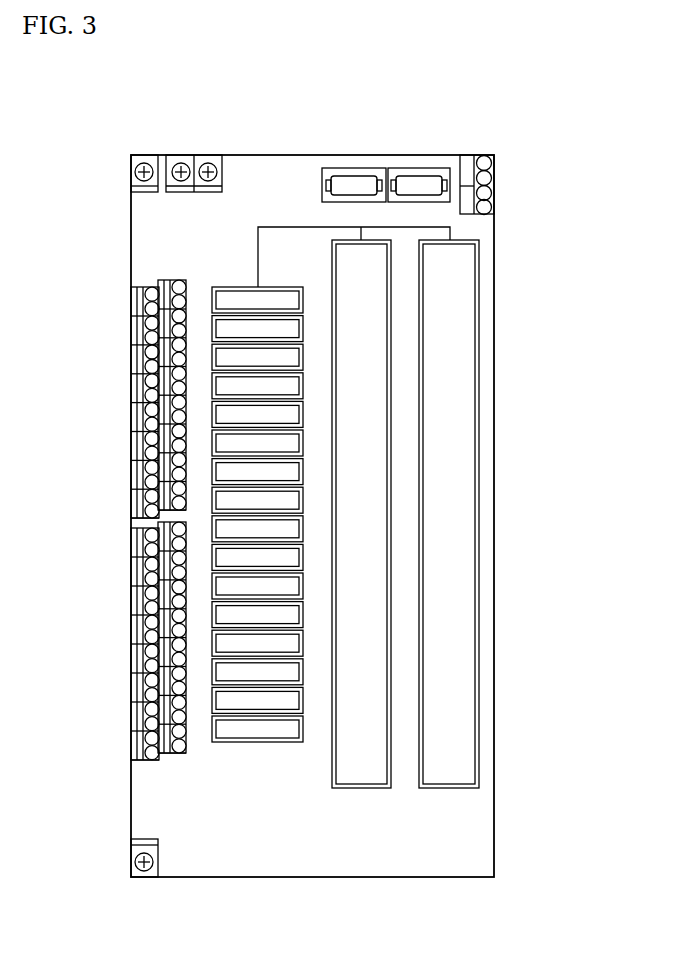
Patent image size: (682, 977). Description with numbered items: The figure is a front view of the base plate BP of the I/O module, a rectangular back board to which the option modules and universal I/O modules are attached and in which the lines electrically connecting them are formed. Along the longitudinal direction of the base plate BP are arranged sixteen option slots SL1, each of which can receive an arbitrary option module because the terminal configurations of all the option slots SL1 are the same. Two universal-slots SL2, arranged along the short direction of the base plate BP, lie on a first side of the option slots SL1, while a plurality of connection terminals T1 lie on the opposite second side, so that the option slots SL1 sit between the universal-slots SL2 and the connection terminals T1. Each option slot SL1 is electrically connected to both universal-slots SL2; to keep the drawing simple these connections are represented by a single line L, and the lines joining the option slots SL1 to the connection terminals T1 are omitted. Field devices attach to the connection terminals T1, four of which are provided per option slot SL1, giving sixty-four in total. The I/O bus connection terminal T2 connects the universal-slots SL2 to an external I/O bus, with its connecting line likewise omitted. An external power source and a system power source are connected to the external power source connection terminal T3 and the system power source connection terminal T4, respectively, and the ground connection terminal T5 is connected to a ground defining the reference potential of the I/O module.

The base plate BP is at (495, 318).
The connection terminal T1 is at (124, 663).
The I/O bus connection terminal T2 is at (388, 156).
The external power source connection terminal T3 is at (195, 145).
The system power source connection terminal T4 is at (507, 185).
The ground connection terminal T5 is at (145, 890).
The line L is at (300, 227).
The option slot SL1 is at (273, 703).
The universal-slot SL2 is at (437, 770).